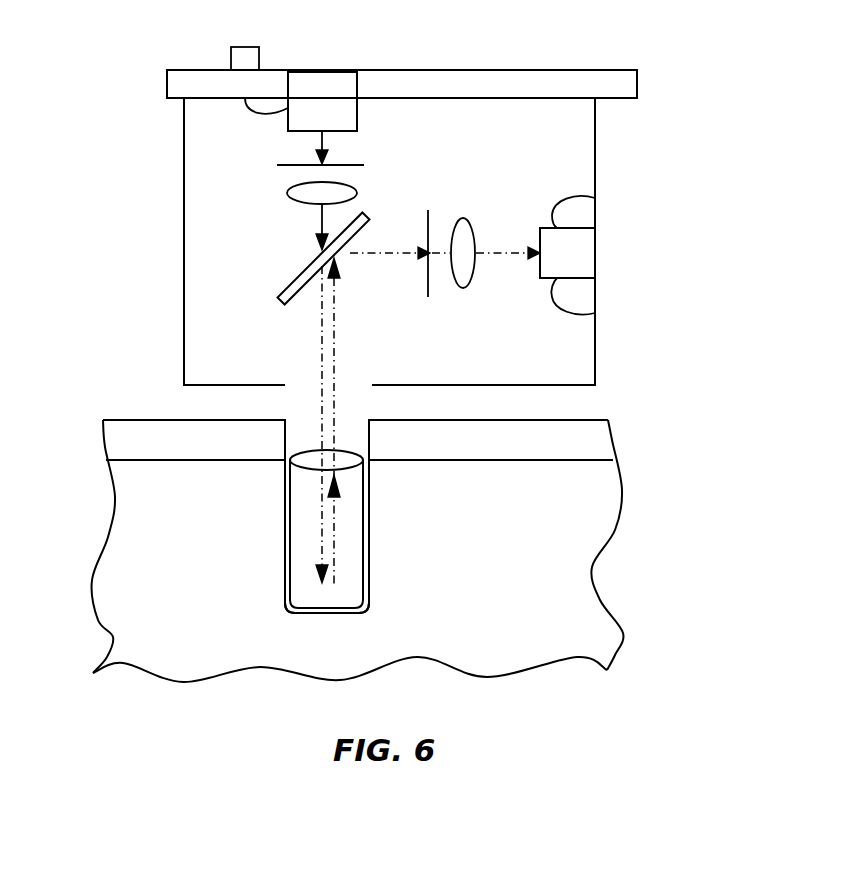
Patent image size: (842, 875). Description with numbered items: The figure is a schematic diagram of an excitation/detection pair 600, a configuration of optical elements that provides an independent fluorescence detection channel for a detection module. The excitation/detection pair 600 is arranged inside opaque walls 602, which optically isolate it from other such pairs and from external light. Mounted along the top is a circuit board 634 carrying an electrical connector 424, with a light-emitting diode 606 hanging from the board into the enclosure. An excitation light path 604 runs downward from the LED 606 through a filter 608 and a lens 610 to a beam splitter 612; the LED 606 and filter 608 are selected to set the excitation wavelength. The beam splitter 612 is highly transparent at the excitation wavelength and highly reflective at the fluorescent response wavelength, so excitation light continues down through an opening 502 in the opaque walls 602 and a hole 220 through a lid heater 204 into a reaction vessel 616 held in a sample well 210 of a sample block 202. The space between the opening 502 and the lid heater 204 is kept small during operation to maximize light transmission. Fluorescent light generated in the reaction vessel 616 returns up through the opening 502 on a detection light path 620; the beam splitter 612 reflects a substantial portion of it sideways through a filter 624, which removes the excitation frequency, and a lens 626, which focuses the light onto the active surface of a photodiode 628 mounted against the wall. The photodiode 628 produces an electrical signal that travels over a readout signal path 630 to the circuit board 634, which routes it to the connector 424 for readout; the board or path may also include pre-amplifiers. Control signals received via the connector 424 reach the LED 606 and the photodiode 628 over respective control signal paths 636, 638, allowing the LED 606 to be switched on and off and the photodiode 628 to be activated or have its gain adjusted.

The electrical connector 424 is at (248, 47).
The light-emitting diode 606 is at (337, 70).
The excitation/detection pair 600 is at (422, 118).
The circuit board 634 is at (600, 70).
The control signal path 636 is at (260, 113).
The filter 608 is at (342, 165).
The lens 610 is at (347, 188).
The excitation light path 604 is at (320, 225).
The beam splitter 612 is at (286, 290).
The opaque walls 602 is at (183, 283).
The detection light path 620 is at (358, 255).
The filter 624 is at (426, 228).
The lens 626 is at (467, 283).
The photodiode 628 is at (590, 244).
The control signal path 638 is at (578, 196).
The readout signal path 630 is at (573, 314).
The opening 502 is at (347, 383).
The hole 220 is at (348, 427).
The lid heater 204 is at (128, 446).
The sample block 202 is at (548, 636).
The reaction vessel 616 is at (366, 503).
The sample well 210 is at (350, 613).